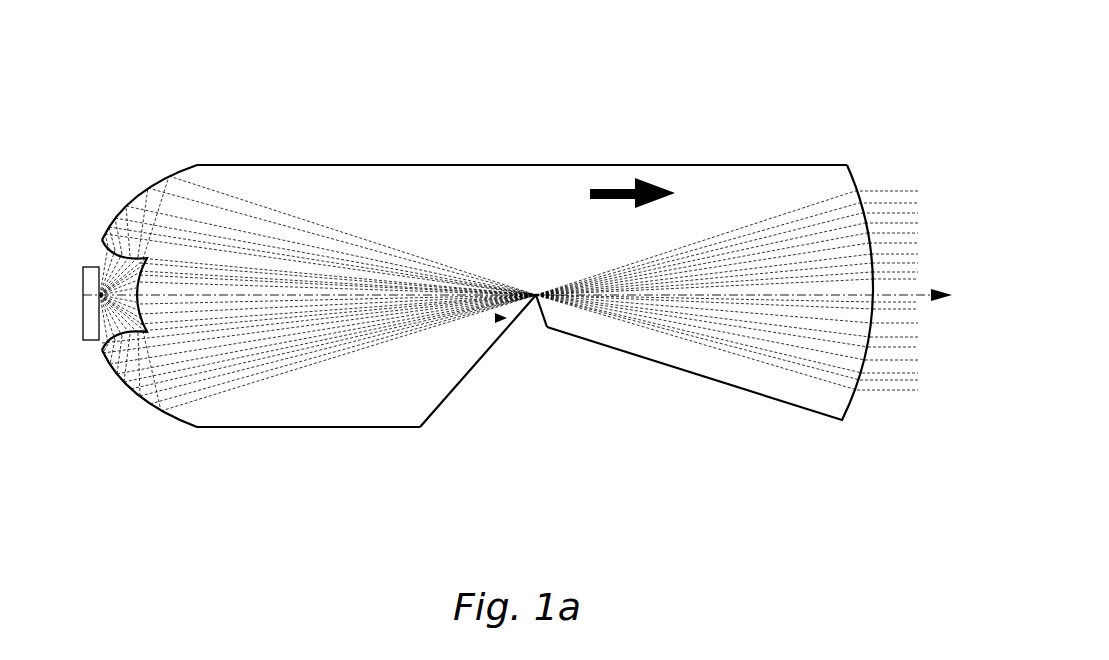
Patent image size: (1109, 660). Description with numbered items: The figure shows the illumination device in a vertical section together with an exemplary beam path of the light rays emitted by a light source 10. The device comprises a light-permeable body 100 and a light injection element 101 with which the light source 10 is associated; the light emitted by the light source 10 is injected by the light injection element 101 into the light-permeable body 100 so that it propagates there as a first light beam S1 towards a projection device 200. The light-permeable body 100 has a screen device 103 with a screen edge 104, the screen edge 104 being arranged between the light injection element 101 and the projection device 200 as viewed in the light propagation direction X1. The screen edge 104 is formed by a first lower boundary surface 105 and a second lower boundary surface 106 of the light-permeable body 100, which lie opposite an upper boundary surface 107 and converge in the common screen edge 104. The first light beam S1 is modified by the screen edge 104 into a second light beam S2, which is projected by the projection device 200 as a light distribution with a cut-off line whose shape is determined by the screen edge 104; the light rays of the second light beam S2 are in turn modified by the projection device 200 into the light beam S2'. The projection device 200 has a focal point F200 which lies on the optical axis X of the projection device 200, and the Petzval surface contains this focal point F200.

The light-permeable body 100 is at (496, 290).
The light source 10 is at (92, 345).
The light injection element 101 is at (117, 260).
The screen device 103 is at (496, 318).
The screen edge 104 is at (536, 290).
The first lower boundary surface 105 is at (545, 318).
The second lower boundary surface 106 is at (488, 350).
The upper boundary surface 107 is at (437, 165).
The projection device 200 is at (853, 402).
The first light beam S1 is at (243, 392).
The second light beam S2 is at (704, 214).
The light beam S2' is at (896, 248).
The focal point F200 is at (540, 293).
The light propagation direction X1 is at (657, 194).
The optical axis X is at (519, 319).